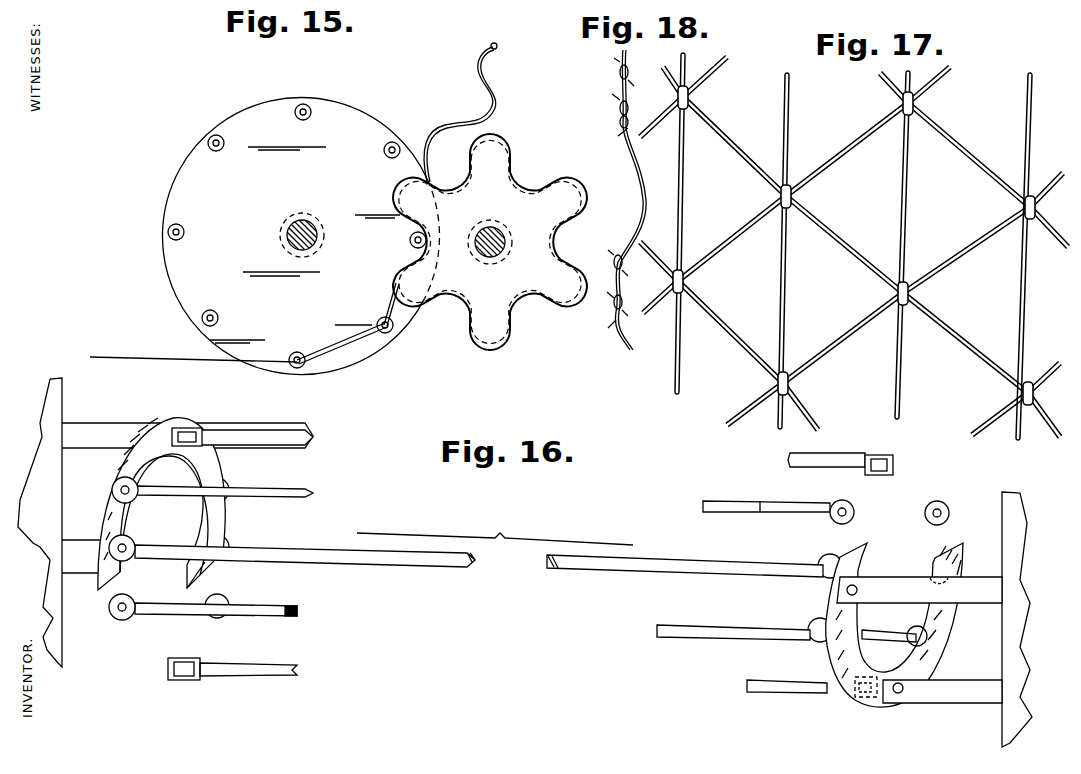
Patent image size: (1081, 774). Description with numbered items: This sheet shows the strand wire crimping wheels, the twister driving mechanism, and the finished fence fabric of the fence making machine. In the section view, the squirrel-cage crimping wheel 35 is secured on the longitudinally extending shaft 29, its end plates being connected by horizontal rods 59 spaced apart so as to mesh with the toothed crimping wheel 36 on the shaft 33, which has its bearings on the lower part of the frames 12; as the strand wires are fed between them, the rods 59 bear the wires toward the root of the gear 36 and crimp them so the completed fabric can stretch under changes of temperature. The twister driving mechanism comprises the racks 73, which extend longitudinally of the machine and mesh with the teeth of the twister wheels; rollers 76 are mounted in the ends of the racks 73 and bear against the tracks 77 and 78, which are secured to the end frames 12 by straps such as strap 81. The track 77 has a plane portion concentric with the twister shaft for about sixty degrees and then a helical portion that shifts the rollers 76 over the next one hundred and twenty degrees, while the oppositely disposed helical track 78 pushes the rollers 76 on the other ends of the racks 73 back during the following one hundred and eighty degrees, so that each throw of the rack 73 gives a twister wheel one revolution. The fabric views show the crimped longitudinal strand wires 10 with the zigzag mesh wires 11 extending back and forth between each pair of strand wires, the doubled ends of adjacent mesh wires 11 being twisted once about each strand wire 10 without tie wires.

In FIG. 18, the strand wires 10 is at (643, 200).
In FIG. 17, the strand wires 10 is at (905, 243).
In FIG. 17, the mesh wires 11 is at (962, 157).
In FIG. 16, the frames 12 is at (48, 484).
In FIG. 15, the shaft 29 is at (305, 223).
In FIG. 15, the shaft 33 is at (503, 237).
In FIG. 15, the crimping wheel 35 is at (383, 137).
In FIG. 15, the crimping wheel 36 is at (504, 155).
In FIG. 15, the rods 59 is at (213, 142).
In FIG. 16, the rack 73 is at (316, 553).
In FIG. 16, the rollers 76 is at (128, 500).
In FIG. 16, the track 77 is at (215, 472).
In FIG. 16, the track 78 is at (870, 702).
In FIG. 16, the strap 81 is at (150, 563).